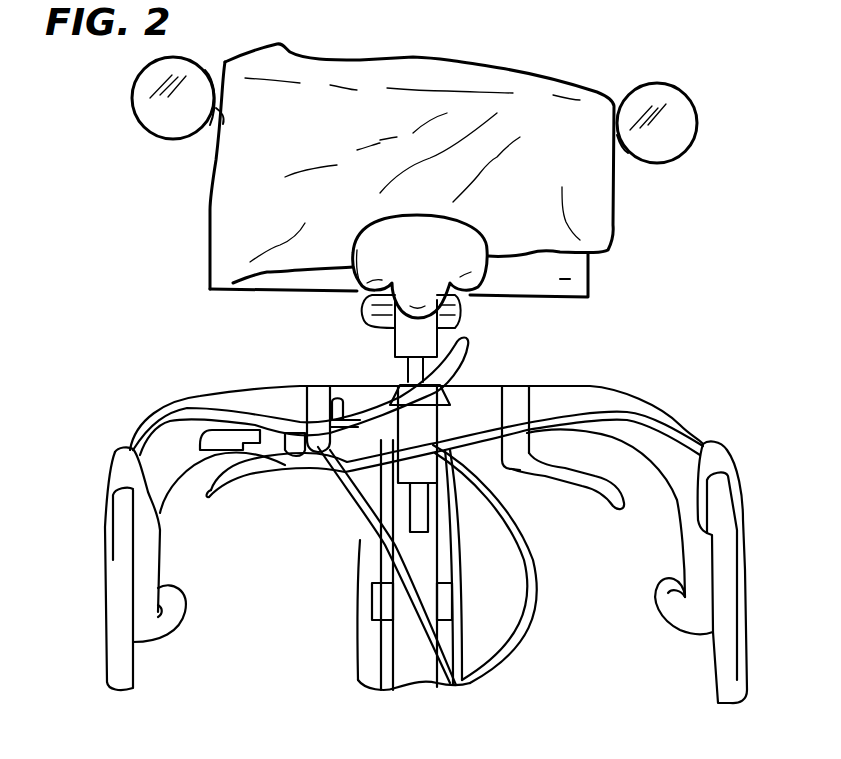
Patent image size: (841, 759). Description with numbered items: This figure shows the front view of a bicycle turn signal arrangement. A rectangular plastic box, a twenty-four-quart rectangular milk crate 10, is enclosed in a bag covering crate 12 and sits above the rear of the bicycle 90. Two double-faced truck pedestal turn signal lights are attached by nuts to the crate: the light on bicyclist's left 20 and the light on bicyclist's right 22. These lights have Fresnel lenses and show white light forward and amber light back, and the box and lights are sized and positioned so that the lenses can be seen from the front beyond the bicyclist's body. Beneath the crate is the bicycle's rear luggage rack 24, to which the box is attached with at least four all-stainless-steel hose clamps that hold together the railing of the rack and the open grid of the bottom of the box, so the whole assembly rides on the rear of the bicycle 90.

The rectangular milk crate 10 is at (567, 278).
The bag covering crate 12 is at (597, 200).
The light on bicyclist's left 20 is at (670, 137).
The light on bicyclist's right 22 is at (153, 115).
The luggage rack 24 is at (442, 318).
The bicycle 90 is at (747, 476).